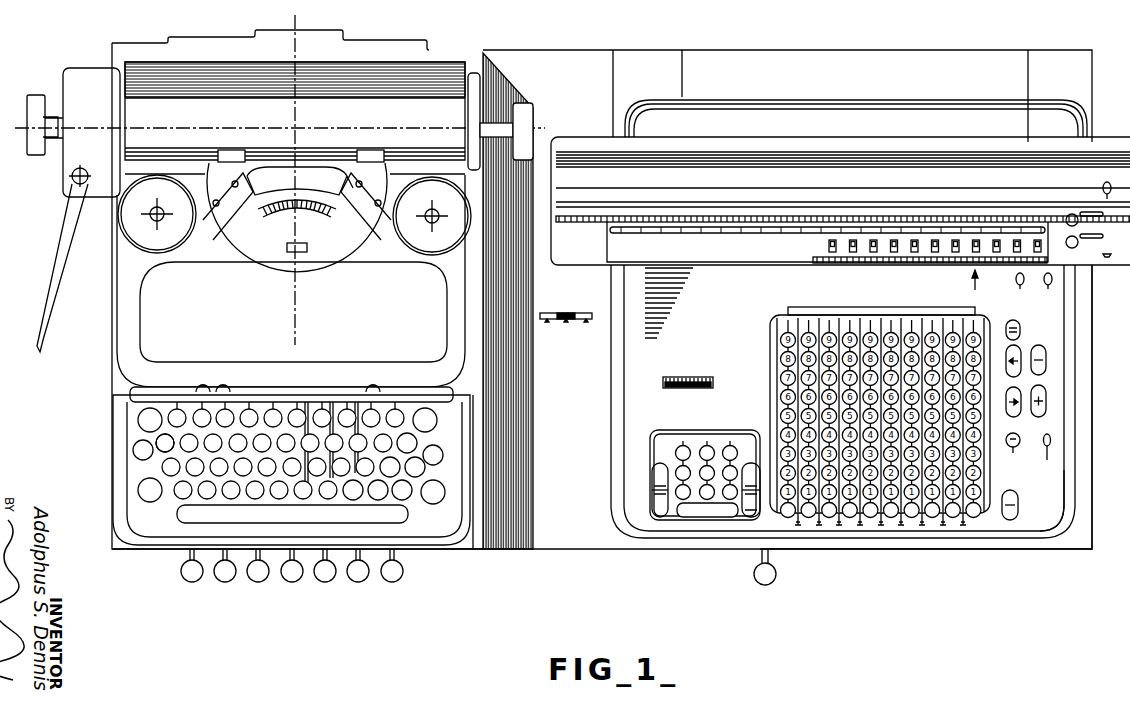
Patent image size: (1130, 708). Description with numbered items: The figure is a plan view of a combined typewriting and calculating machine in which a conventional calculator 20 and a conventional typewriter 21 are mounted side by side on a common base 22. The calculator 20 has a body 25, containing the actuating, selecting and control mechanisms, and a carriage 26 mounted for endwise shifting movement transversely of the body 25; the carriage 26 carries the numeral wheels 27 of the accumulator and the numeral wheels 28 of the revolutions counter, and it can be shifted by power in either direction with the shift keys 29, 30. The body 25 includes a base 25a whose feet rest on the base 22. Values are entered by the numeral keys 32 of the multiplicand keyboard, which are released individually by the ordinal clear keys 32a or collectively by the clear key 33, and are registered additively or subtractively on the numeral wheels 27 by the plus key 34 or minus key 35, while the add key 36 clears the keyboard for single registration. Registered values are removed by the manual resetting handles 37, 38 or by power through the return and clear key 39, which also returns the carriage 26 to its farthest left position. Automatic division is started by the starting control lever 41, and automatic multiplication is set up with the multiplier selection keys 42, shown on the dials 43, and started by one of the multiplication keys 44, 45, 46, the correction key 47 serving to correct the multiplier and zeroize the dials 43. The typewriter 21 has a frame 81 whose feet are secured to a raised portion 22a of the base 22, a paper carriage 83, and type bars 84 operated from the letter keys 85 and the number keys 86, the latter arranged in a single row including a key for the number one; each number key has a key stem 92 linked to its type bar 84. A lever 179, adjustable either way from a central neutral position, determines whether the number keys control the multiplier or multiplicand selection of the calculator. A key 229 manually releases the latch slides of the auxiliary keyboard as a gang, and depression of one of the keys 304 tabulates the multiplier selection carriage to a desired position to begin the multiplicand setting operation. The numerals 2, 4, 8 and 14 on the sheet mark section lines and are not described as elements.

The section line 2- 2 is at (893, 300).
The section line 4- 4 is at (708, 372).
The section line 8- 8 is at (588, 302).
The section line 14- 14 is at (248, 378).
The calculator 20 is at (1043, 546).
The typewriter 21 is at (126, 337).
The base 22 is at (558, 549).
The raised portion 22a is at (468, 549).
The body 25 is at (987, 523).
The base 25a is at (1078, 493).
The carriage 26 is at (757, 150).
The numeral wheels 27 is at (955, 222).
The numeral wheels 28 is at (1017, 253).
The shift key 29 is at (1010, 391).
The shift key 30 is at (1021, 350).
The numeral keys 32 is at (785, 357).
The ordinal clear keys 32a is at (872, 517).
The clear key 33 is at (1018, 507).
The plus key 34 is at (1036, 417).
The minus key 35 is at (1044, 366).
The add key 36 is at (1019, 446).
The resetting handle 37 is at (1072, 213).
The resetting handle 38 is at (1070, 247).
The return and clear key 39 is at (1012, 321).
The starting control lever 41 is at (1046, 463).
The multiplier selection keys 42 is at (694, 447).
The dials 43 is at (676, 373).
The multiplication key 44 is at (652, 503).
The multiplication key 45 is at (652, 477).
The multiplication key 46 is at (753, 518).
The correction key 47 is at (748, 463).
The frame 81 is at (118, 426).
The paper carriage 83 is at (63, 165).
The type bars 84 is at (276, 212).
The letter keys 85 is at (163, 450).
The number keys 86 is at (380, 393).
The key stem 92 is at (214, 395).
The lever 179 is at (575, 313).
The key 229 is at (773, 583).
The keys 304 is at (191, 582).